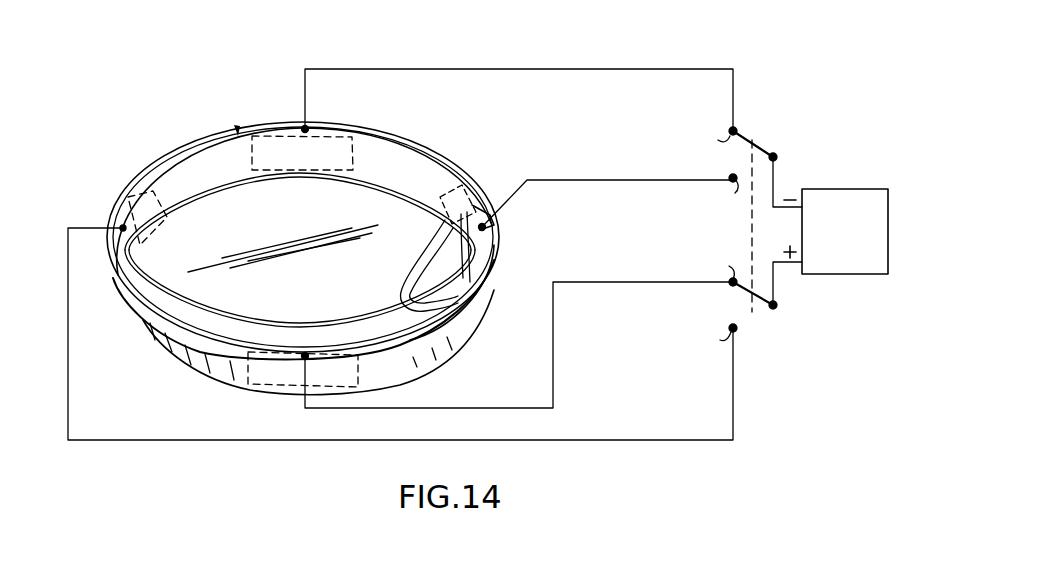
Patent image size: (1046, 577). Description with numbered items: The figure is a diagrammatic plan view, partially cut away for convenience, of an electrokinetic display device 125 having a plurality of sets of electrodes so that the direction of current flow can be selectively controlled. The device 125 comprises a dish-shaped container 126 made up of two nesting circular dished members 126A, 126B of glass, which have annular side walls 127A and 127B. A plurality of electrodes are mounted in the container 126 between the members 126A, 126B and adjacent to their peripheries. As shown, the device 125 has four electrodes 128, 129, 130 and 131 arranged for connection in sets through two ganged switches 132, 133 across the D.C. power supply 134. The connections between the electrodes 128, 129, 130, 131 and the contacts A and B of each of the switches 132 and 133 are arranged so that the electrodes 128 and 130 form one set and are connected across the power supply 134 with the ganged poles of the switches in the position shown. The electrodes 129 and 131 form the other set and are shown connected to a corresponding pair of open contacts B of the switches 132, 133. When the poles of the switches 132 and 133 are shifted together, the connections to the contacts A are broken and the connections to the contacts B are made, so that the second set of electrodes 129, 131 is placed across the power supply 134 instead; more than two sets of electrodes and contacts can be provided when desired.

The electrokinetic device 125 is at (166, 122).
The dish-shaped container 126 is at (237, 127).
The circular dished member 126A is at (464, 173).
The circular dished member 126B is at (476, 300).
The annular side wall 127A is at (178, 178).
The annular side wall 127B is at (143, 332).
The electrode 128 is at (326, 141).
The electrode 129 is at (485, 256).
The electrode 130 is at (272, 394).
The electrode 131 is at (118, 186).
The ganged switch 132 is at (757, 150).
The ganged switch 133 is at (762, 310).
The D.C. power supply 134 is at (857, 189).